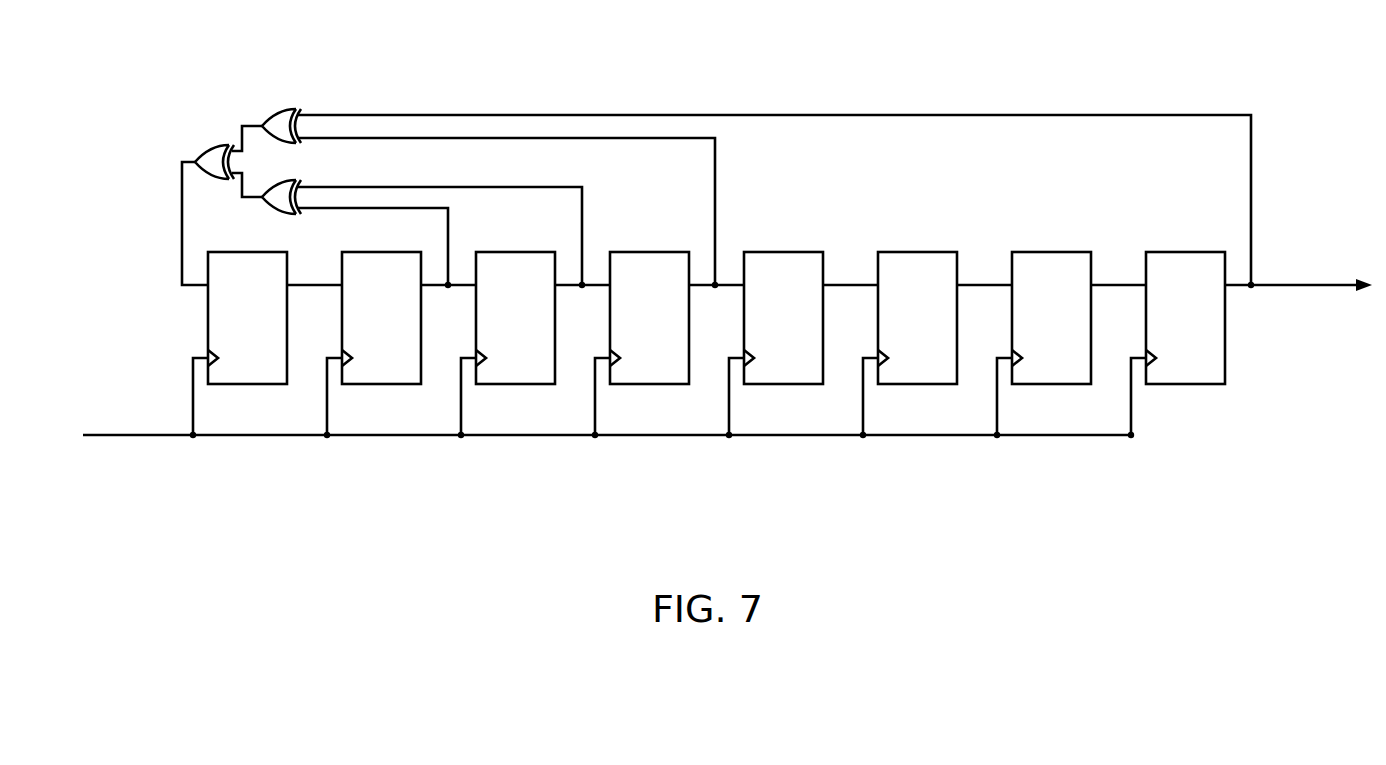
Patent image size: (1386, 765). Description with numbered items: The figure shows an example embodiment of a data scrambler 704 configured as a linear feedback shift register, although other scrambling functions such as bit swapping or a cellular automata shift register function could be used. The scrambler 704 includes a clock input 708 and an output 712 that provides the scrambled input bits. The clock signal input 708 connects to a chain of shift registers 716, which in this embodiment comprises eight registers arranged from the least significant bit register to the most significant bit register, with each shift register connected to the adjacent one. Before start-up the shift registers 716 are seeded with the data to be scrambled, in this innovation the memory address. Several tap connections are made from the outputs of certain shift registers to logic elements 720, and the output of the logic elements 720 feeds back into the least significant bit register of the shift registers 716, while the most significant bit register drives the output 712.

The scrambler 704 is at (272, 492).
The clock input 708 is at (108, 437).
The output 712 is at (1330, 288).
The shift registers 716 is at (206, 323).
The logic elements 720 is at (188, 112).